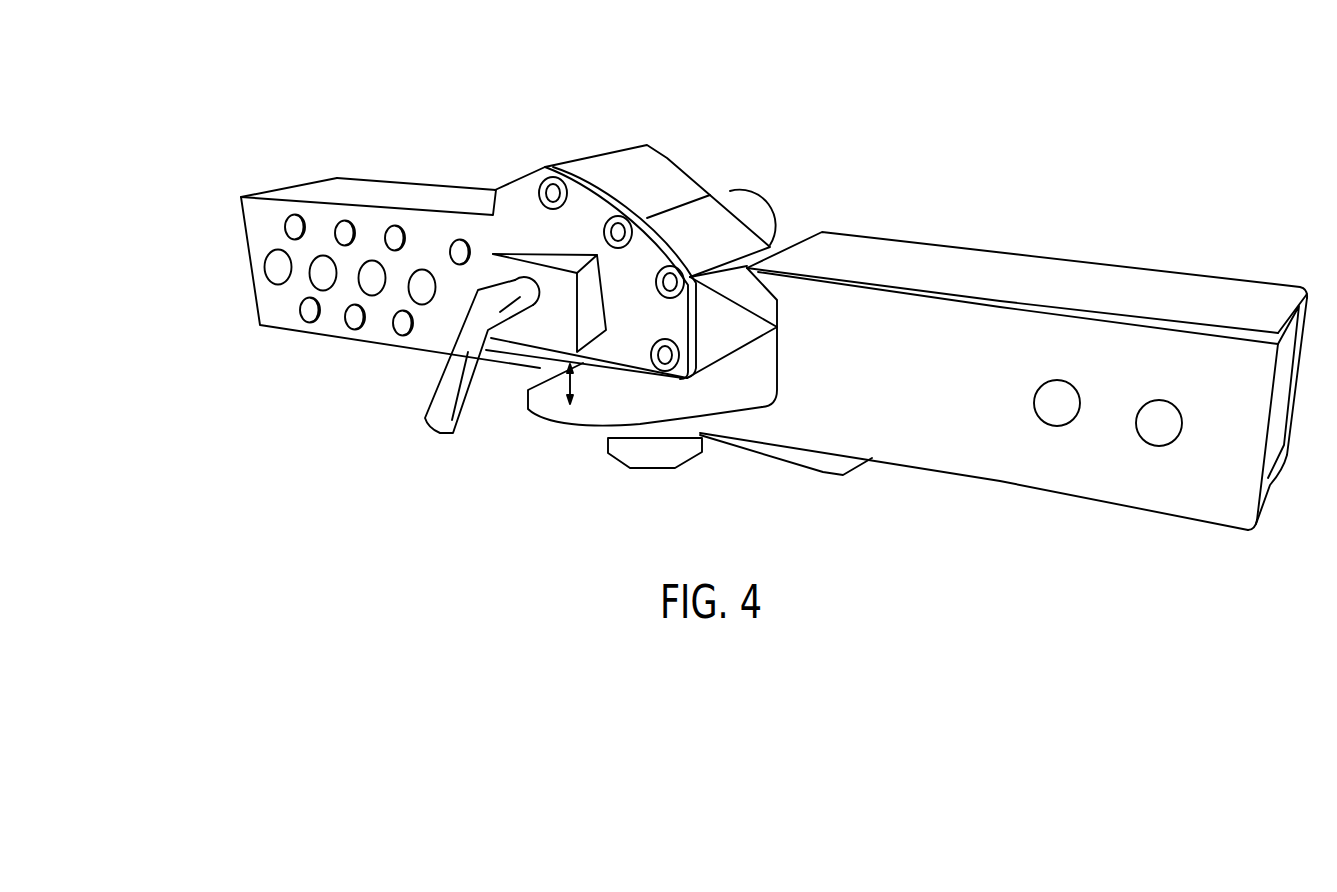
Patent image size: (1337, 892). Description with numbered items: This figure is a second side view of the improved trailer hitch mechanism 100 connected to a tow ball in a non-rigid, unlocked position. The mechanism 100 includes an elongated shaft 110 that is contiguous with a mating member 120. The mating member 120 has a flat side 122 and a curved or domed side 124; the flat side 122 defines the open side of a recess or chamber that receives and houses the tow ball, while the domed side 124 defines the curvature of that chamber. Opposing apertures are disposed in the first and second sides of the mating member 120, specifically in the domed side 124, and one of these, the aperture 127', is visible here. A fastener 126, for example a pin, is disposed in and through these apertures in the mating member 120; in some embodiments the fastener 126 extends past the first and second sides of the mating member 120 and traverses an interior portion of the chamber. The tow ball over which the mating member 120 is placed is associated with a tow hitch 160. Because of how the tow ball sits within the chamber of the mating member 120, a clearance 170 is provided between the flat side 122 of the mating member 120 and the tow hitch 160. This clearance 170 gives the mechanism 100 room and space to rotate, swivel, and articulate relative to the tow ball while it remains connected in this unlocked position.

The hitch mechanism 100 is at (408, 91).
The elongated shaft 110 is at (328, 337).
The mating member 120 is at (648, 95).
The flat side 122 is at (541, 359).
The domed side 124 is at (667, 157).
The fastener 126 is at (435, 415).
The aperture 127' is at (502, 216).
The tow hitch 160 is at (598, 425).
The clearance 170 is at (567, 373).